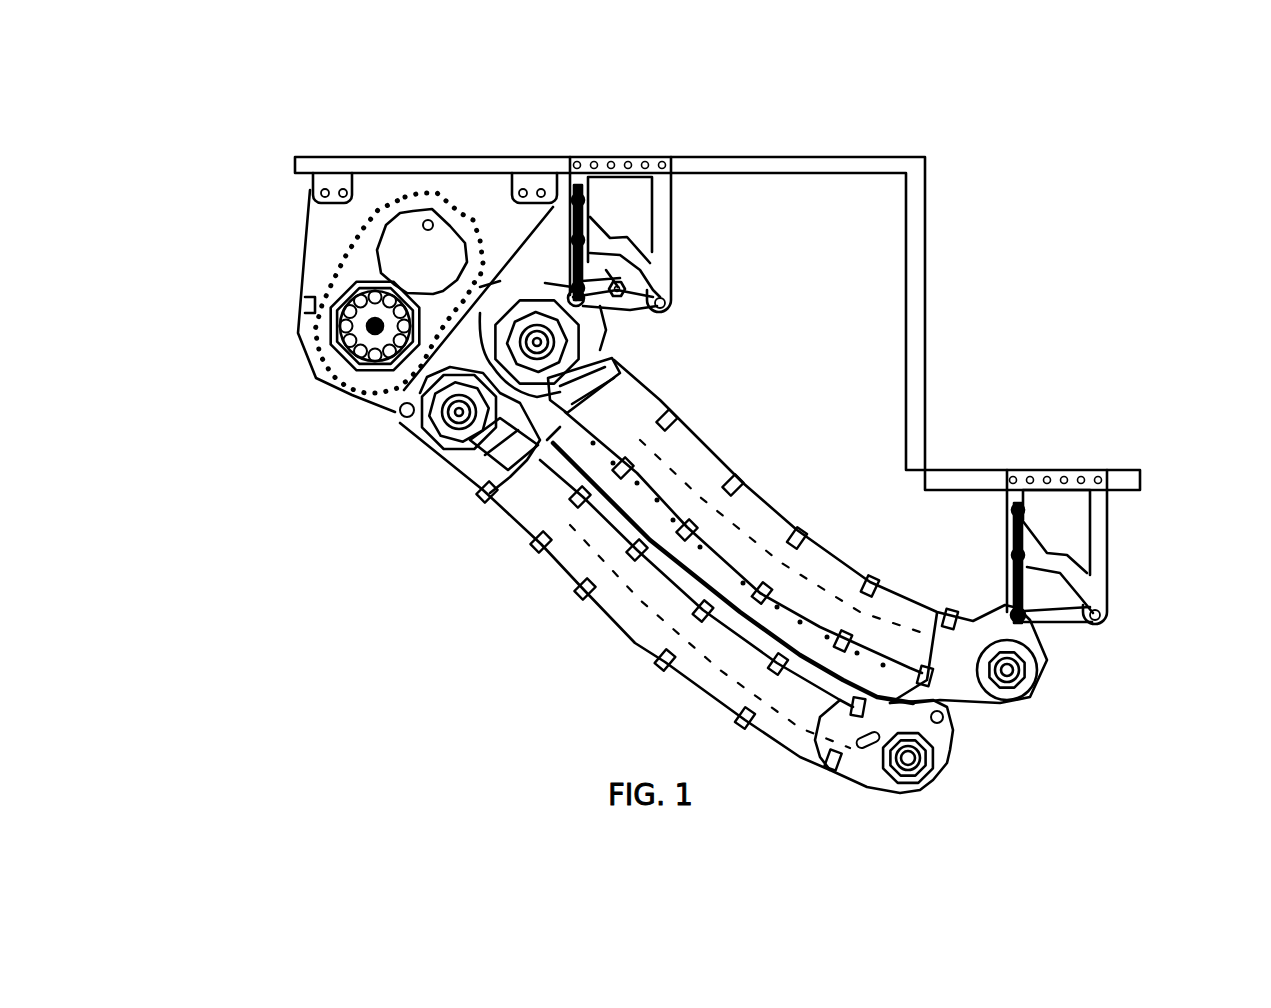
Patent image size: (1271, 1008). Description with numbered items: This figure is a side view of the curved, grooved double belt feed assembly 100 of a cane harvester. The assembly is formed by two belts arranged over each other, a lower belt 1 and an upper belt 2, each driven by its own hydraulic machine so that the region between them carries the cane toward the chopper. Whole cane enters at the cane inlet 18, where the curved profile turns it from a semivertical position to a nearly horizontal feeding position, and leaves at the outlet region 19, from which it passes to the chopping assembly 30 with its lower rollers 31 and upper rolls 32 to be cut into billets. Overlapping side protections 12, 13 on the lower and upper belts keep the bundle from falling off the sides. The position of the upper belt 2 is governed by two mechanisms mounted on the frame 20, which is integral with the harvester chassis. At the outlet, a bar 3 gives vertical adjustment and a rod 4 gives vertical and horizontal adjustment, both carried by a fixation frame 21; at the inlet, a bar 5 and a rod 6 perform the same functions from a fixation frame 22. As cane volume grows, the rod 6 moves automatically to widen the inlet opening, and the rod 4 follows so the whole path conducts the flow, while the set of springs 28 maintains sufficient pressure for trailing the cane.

The lower belt 1 is at (638, 603).
The upper belt 2 is at (682, 457).
The bar for vertical adjustment of the upper belt at the outlet 3 is at (572, 274).
The rod for vertical/horizontal adjustment of the upper belt at the outlet 4 is at (622, 313).
The bar for vertical adjustment of the upper belt at the inlet 5 is at (1012, 588).
The rod for vertical/horizontal adjustment of the upper belt at the inlet 6 is at (1070, 620).
The side protection 12 is at (618, 519).
The side protection 13 is at (717, 560).
The cane inlet 18 is at (982, 737).
The outlet region 19 is at (468, 340).
The frame 20 is at (942, 171).
The fixation frame 21 is at (642, 273).
The fixation frame 22 is at (1089, 585).
The set of springs 28 is at (576, 186).
The chopping assembly 30 is at (339, 251).
The lower rollers 31 is at (343, 352).
The upper rolls 32 is at (438, 228).
The double belt feed assembly 100 is at (330, 768).